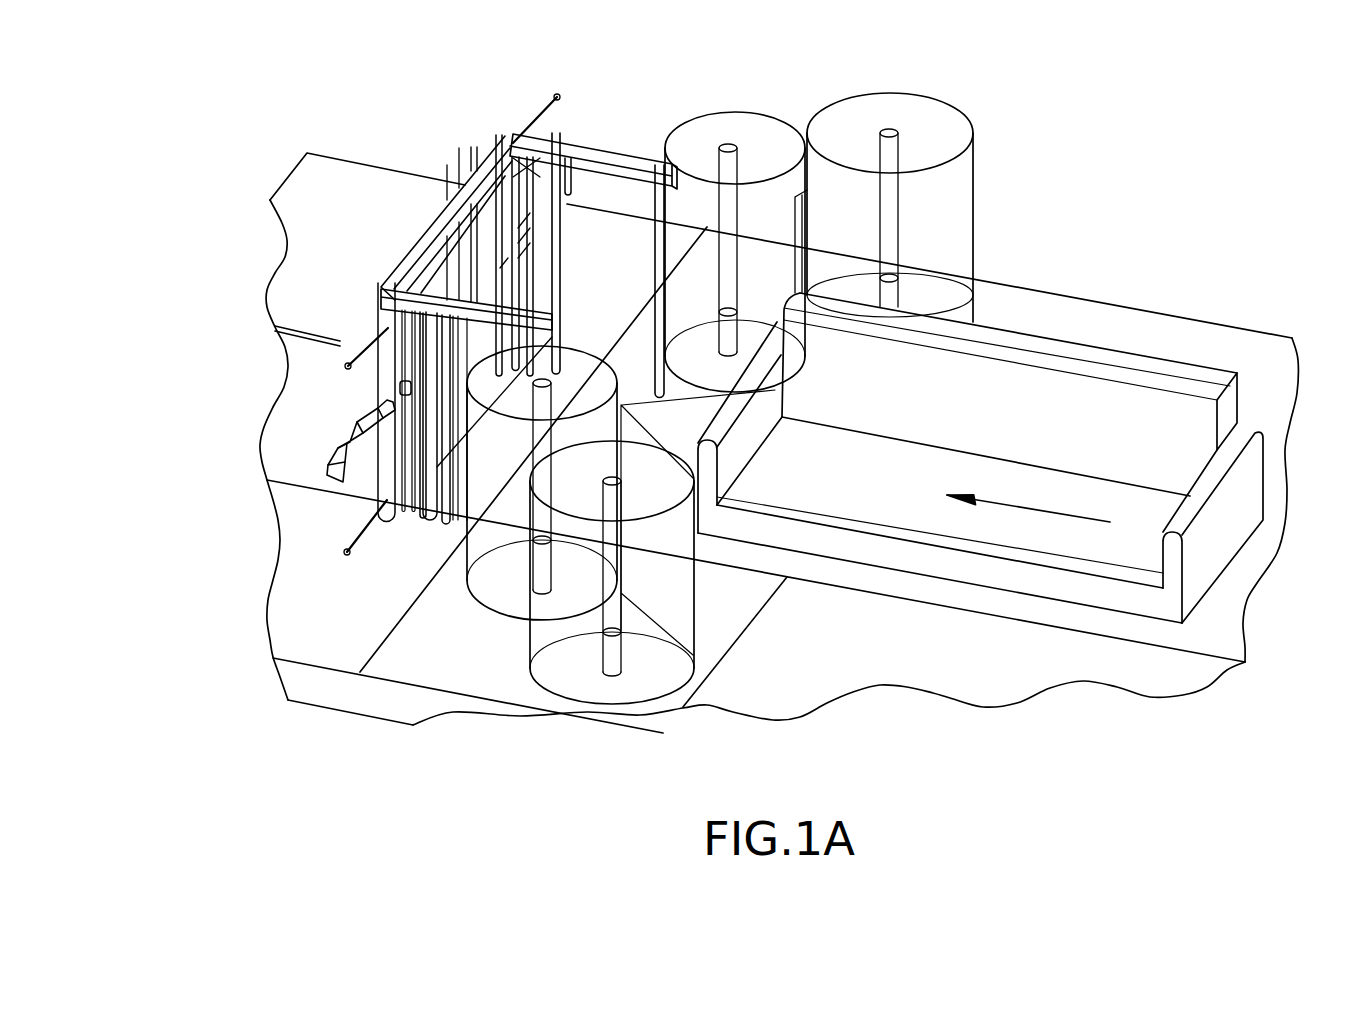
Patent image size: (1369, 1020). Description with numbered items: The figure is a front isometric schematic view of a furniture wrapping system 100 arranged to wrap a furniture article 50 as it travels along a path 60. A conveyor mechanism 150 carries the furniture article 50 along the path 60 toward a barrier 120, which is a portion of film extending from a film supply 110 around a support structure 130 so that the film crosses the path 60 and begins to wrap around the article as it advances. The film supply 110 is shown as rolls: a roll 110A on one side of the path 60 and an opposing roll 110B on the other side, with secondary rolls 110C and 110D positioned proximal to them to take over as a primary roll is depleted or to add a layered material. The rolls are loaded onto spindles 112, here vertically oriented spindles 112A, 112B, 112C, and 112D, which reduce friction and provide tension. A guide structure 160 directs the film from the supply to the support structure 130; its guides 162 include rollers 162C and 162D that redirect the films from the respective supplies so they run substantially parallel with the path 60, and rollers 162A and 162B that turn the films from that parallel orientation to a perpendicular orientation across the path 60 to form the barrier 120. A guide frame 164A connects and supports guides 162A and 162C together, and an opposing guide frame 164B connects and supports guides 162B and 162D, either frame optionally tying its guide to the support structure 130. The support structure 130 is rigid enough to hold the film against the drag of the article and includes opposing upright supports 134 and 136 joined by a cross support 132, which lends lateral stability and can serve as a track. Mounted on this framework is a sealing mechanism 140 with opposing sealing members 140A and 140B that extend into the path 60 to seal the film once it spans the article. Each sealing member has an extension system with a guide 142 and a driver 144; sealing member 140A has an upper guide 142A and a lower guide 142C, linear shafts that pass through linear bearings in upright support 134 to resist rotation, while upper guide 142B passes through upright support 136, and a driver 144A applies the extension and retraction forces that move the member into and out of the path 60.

The furniture article 50 is at (983, 455).
The path 60 is at (1040, 512).
The furniture wrapping system 100 is at (797, 494).
The film supply 110 is at (430, 551).
The film supply 110A is at (493, 593).
The film supply 110B is at (750, 123).
The secondary roll 110C is at (573, 660).
The secondary roll 110D is at (930, 140).
The spindles 112 is at (414, 503).
The spindle 112A is at (532, 557).
The spindle 112B is at (730, 330).
The spindle 112C is at (617, 650).
The spindle 112D is at (895, 293).
The barrier 120 is at (512, 138).
The support structure 130 is at (270, 200).
The cross support 132 is at (335, 230).
The upright support 134 is at (387, 373).
The upright support 136 is at (473, 160).
The sealing mechanism 140 is at (432, 308).
The sealing member 140A is at (432, 308).
The sealing member 140B is at (477, 238).
The guide 142 is at (271, 352).
The upper guide 142A is at (348, 364).
The upper guide 142B is at (540, 130).
The lower guide 142C is at (346, 552).
The driver 144 is at (266, 441).
The driver 144A is at (348, 440).
The conveyor mechanism 150 is at (1218, 617).
The guide structure 160 is at (582, 150).
The guides 162 is at (426, 204).
The guide 162A is at (417, 485).
The guide 162B is at (499, 225).
The guide 162C is at (549, 338).
The guide 162D is at (670, 180).
The guide frame 164A is at (378, 290).
The guide frame 164B is at (613, 165).